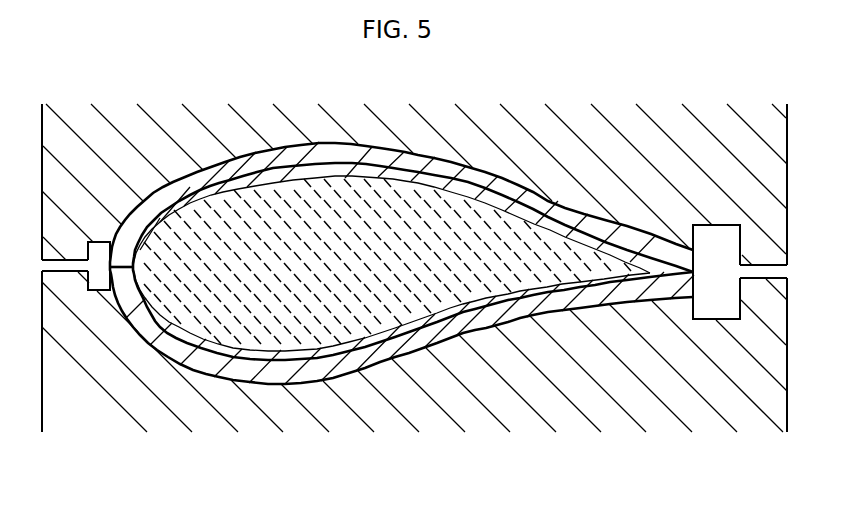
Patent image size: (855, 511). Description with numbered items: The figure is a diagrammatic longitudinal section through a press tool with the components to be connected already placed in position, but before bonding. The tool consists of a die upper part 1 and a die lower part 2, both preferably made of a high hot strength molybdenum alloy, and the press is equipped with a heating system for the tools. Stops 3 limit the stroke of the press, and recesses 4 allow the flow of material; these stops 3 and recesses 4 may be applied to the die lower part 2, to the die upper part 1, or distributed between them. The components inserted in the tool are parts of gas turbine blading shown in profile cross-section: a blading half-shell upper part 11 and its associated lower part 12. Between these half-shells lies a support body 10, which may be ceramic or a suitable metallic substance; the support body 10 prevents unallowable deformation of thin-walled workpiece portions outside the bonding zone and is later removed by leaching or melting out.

The die upper part 1 is at (573, 153).
The die lower part 2 is at (488, 385).
The stop 3 is at (65, 260).
The recess 4 is at (98, 242).
The support body 10 is at (350, 300).
The blading half-shell, upper part 11 is at (205, 178).
The blading half-shell, lower part 12 is at (192, 352).